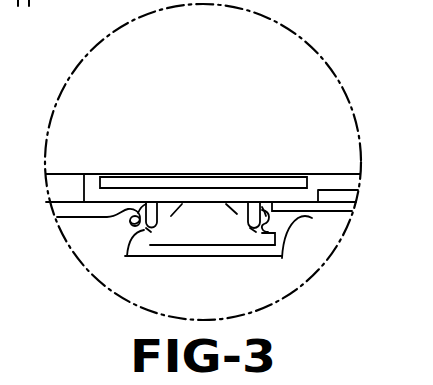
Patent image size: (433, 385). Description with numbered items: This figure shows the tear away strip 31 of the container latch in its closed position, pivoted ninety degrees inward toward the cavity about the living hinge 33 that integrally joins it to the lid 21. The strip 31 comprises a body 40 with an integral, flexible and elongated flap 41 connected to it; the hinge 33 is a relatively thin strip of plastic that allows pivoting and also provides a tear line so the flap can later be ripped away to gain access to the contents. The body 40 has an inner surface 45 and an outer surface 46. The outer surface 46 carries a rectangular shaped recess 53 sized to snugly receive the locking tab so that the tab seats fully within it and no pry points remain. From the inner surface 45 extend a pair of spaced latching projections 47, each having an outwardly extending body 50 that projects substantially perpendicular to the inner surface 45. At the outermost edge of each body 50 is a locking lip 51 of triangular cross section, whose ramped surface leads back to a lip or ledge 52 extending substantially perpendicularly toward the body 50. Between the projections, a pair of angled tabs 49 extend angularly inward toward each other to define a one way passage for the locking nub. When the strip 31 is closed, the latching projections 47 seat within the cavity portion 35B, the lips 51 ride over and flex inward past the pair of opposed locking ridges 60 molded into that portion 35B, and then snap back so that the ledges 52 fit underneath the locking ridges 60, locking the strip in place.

The lid 21 is at (108, 304).
The tear away strip 31 is at (198, 158).
The living hinge 33 is at (172, 175).
The cavity portion 35B is at (199, 238).
The body 40 is at (88, 160).
The flap 41 is at (336, 163).
The inner surface 45 is at (305, 204).
The outer surface 46 is at (313, 175).
The latching projections 47 is at (146, 252).
The angled tabs 49 is at (181, 206).
The body 50 is at (155, 203).
The locking lip 51 is at (129, 224).
The lip or ledge 52 is at (133, 214).
The recess 53 is at (220, 180).
The locking ridges 60 is at (141, 205).